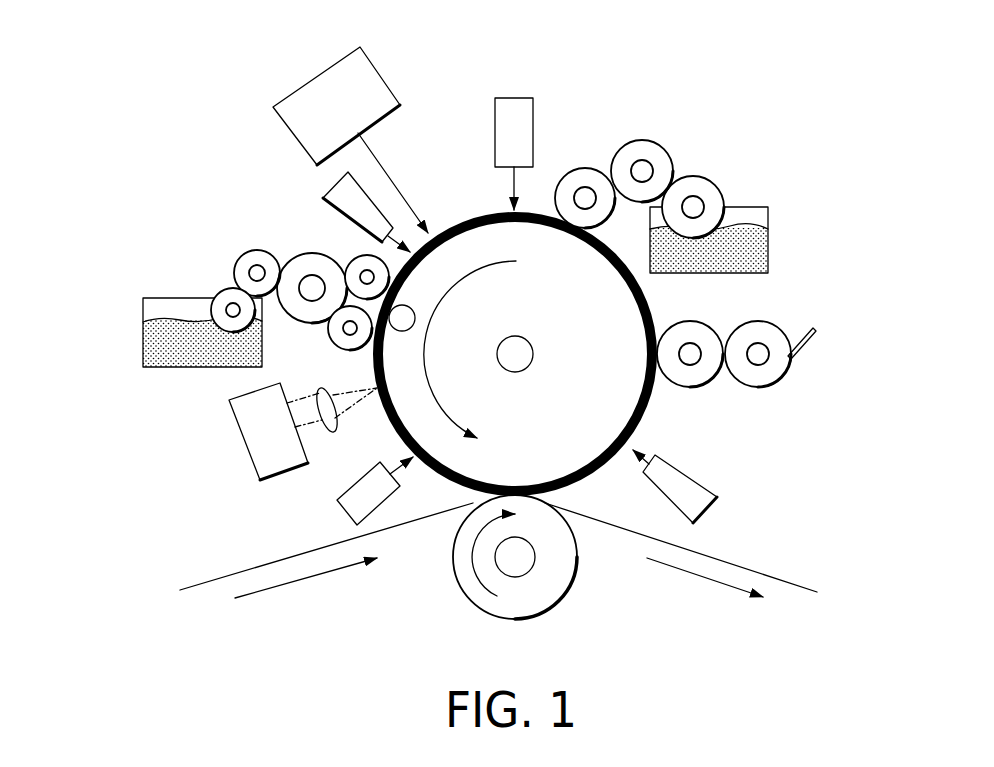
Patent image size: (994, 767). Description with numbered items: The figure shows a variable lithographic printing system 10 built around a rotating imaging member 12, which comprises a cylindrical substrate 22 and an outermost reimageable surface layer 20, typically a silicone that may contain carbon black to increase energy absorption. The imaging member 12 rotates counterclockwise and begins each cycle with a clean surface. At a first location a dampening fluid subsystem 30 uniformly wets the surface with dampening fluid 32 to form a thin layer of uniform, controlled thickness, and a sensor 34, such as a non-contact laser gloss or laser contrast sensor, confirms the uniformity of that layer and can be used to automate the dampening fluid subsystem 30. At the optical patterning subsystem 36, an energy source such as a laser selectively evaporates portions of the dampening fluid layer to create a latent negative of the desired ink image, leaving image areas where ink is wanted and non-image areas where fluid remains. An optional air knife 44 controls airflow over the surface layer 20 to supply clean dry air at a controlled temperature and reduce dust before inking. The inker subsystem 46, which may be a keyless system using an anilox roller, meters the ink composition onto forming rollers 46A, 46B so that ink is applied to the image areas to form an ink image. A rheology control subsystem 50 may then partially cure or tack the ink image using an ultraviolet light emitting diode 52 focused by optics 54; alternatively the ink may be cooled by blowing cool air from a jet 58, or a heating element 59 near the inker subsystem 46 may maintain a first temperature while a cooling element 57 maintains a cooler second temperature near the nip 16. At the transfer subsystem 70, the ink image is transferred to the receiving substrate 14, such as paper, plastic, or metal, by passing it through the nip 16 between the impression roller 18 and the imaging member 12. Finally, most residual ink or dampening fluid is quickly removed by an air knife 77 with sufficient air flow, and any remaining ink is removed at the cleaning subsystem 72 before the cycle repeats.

The system 10 is at (198, 128).
The imaging member 12 is at (652, 408).
The receiving substrate 14 is at (276, 563).
The nip 16 is at (513, 490).
The impression roller 18 is at (574, 579).
The reimageable surface layer 20 is at (481, 218).
The substrate 22 is at (466, 244).
The dampening fluid subsystem 30 is at (674, 161).
The dampening fluid 32 is at (770, 252).
The sensor 34 is at (515, 92).
The optical patterning subsystem 36 is at (381, 70).
The air knife 44 is at (330, 188).
The inker subsystem 46 is at (212, 303).
The forming roller 46A is at (397, 293).
The forming roller 46B is at (384, 338).
The rheology control subsystem 50 is at (279, 436).
The ultraviolet light emitting diode 52 is at (287, 477).
The optics 54 is at (337, 420).
The cooling element 57 is at (433, 437).
The jet 58 is at (343, 511).
The heating element 59 is at (403, 318).
The transfer subsystem 70 is at (515, 645).
The cleaning subsystem 72 is at (764, 351).
The air knife 77 is at (706, 510).